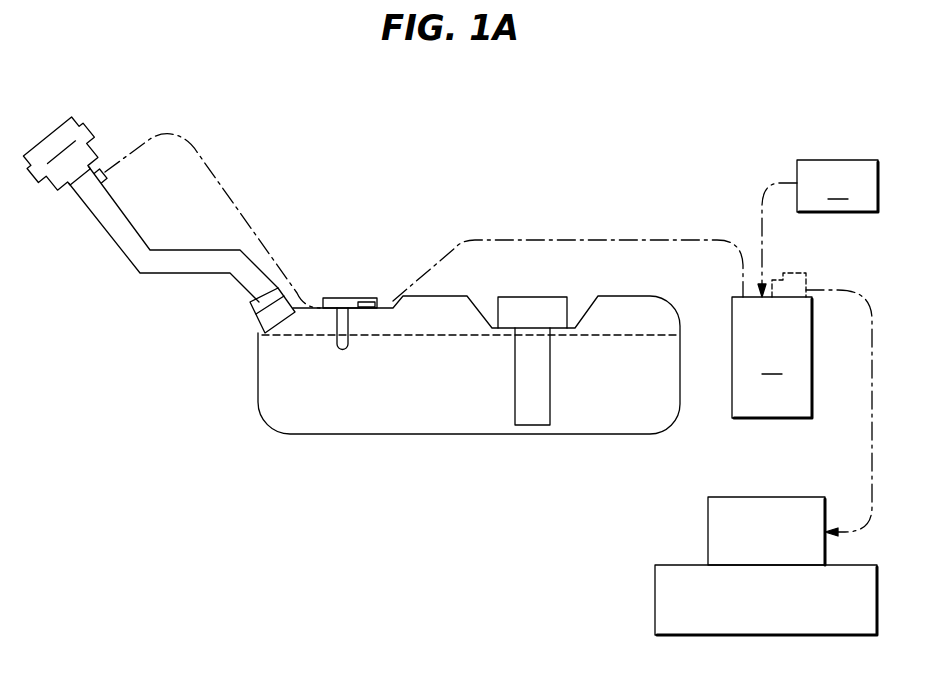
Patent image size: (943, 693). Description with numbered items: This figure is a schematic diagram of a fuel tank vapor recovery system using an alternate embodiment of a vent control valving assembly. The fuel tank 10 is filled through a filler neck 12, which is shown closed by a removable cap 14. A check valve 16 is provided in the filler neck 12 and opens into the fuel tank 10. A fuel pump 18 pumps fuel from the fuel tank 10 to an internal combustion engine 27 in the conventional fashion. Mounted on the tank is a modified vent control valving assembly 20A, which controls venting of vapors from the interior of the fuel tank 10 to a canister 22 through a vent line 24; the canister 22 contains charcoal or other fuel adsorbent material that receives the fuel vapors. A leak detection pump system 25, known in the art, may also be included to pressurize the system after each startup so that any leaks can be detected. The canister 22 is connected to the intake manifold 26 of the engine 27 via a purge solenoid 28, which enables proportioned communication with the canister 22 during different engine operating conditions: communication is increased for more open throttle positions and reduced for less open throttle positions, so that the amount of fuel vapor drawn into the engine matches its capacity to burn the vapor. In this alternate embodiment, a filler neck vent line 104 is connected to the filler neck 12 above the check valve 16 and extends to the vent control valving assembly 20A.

The fuel tank 10 is at (350, 434).
The filler neck 12 is at (116, 242).
The removable cap 14 is at (50, 124).
The check valve 16 is at (256, 318).
The fuel pump 18 is at (535, 297).
The vent control valving assembly 20A is at (346, 297).
The canister 22 is at (772, 357).
The vent line 24 is at (646, 240).
The leak detection pump system 25 is at (818, 228).
The intake manifold 26 is at (708, 520).
The internal combustion engine 27 is at (655, 598).
The purge solenoid 28 is at (793, 273).
The filler neck vent line 104 is at (228, 196).